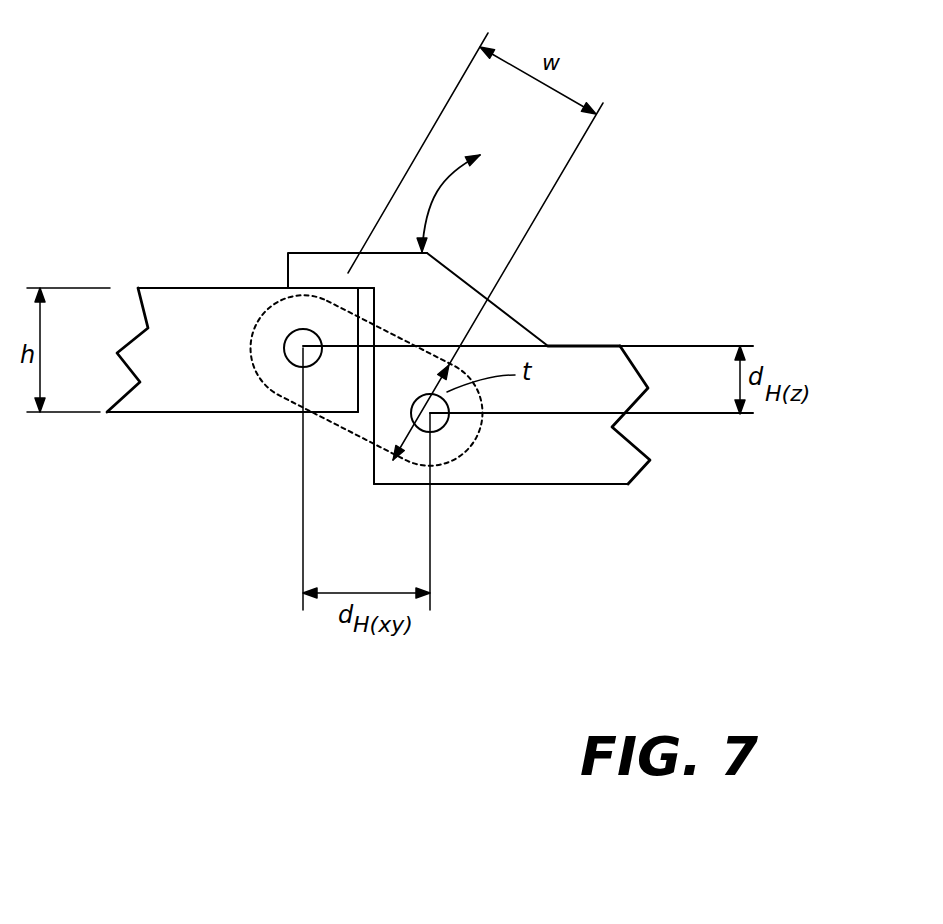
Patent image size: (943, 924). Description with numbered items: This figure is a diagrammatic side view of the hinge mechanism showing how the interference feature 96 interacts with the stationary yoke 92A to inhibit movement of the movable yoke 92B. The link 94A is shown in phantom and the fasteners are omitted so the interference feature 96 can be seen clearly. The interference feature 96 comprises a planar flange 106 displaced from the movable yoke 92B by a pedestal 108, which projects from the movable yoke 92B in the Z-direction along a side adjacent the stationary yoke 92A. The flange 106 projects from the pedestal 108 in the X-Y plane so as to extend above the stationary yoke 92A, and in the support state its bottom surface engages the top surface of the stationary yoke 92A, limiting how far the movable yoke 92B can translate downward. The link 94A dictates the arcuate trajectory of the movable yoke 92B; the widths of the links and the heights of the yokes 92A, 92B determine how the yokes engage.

The stationary yoke 92A is at (178, 313).
The movable yoke 92B is at (583, 462).
The link 94A is at (257, 354).
The interference feature 96 is at (463, 189).
The planar flange 106 is at (322, 272).
The pedestal 108 is at (445, 297).